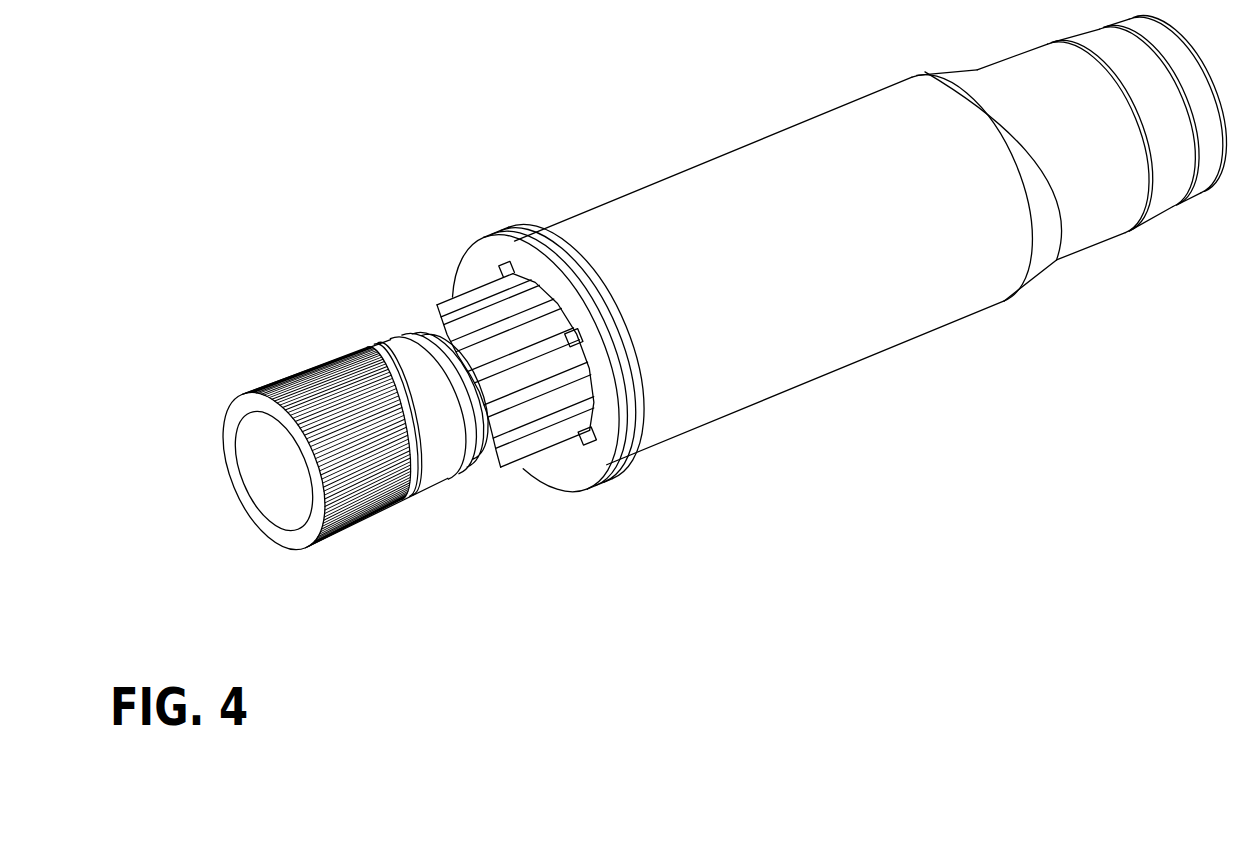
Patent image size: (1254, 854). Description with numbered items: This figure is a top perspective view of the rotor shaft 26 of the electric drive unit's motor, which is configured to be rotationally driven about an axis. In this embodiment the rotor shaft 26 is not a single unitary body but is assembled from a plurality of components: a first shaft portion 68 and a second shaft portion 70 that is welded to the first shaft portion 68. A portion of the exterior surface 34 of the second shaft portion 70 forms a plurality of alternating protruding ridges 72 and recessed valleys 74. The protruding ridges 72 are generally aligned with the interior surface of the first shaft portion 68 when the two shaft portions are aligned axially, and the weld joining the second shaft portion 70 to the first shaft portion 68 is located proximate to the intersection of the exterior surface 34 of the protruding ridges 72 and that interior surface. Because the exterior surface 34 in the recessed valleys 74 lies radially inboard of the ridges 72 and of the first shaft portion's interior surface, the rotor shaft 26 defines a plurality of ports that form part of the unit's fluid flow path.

The rotor shaft 26 is at (664, 177).
The exterior surface 34 is at (570, 388).
The first shaft portion 68 is at (764, 153).
The second shaft portion 70 is at (447, 447).
The protruding ridges 72 is at (453, 298).
The recessed valleys 74 is at (403, 212).